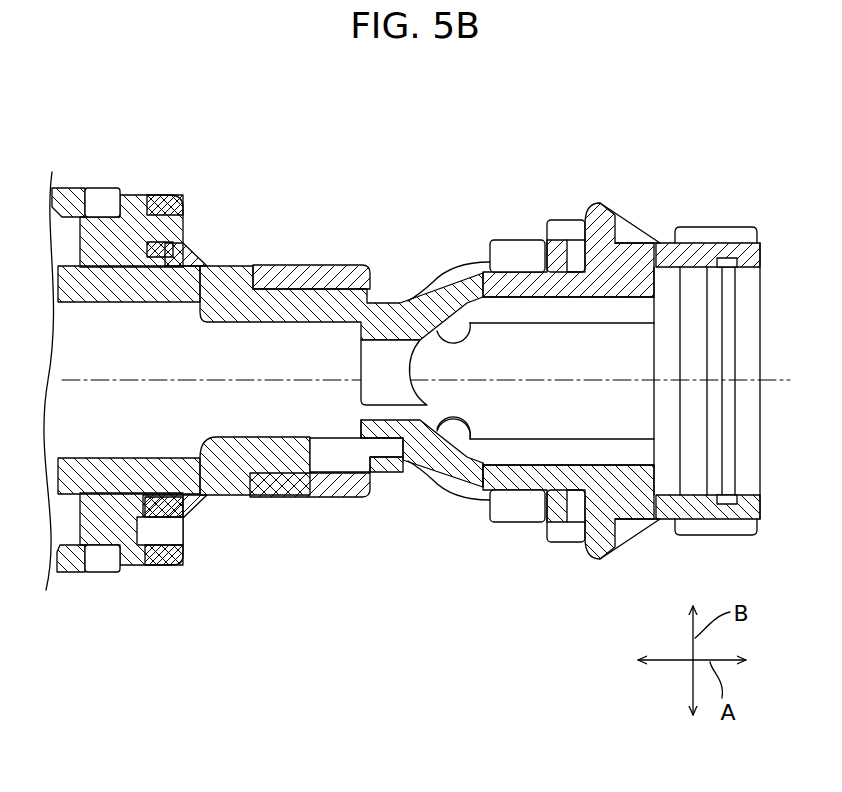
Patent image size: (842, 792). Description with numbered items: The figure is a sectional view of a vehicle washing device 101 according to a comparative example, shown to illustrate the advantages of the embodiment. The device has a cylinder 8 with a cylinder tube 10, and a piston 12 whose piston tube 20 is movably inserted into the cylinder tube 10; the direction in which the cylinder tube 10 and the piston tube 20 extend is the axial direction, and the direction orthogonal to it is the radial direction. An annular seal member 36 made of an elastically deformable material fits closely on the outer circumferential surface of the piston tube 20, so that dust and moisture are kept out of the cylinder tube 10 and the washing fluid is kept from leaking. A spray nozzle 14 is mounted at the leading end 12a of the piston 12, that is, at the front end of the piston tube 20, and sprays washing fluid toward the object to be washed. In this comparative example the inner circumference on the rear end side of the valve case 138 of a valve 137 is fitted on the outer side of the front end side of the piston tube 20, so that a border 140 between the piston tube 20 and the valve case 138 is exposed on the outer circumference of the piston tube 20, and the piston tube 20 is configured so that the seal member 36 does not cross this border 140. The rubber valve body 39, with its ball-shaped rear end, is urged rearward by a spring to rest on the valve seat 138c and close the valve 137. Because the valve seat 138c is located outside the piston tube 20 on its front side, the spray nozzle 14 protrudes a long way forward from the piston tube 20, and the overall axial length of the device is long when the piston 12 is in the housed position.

The cylinder tube 10 is at (85, 188).
The cylinder 8 is at (101, 185).
The piston tube 20 is at (185, 246).
The piston 12 is at (222, 254).
The border 140 is at (260, 255).
The leading end 12a is at (405, 300).
The valve body 39 is at (462, 486).
The spray nozzle 14 is at (634, 184).
The valve seat 138c is at (447, 282).
The valve 137 is at (485, 228).
The valve case 138 is at (574, 280).
The vehicle washing device 101 is at (699, 152).
The seal member 36 is at (164, 569).